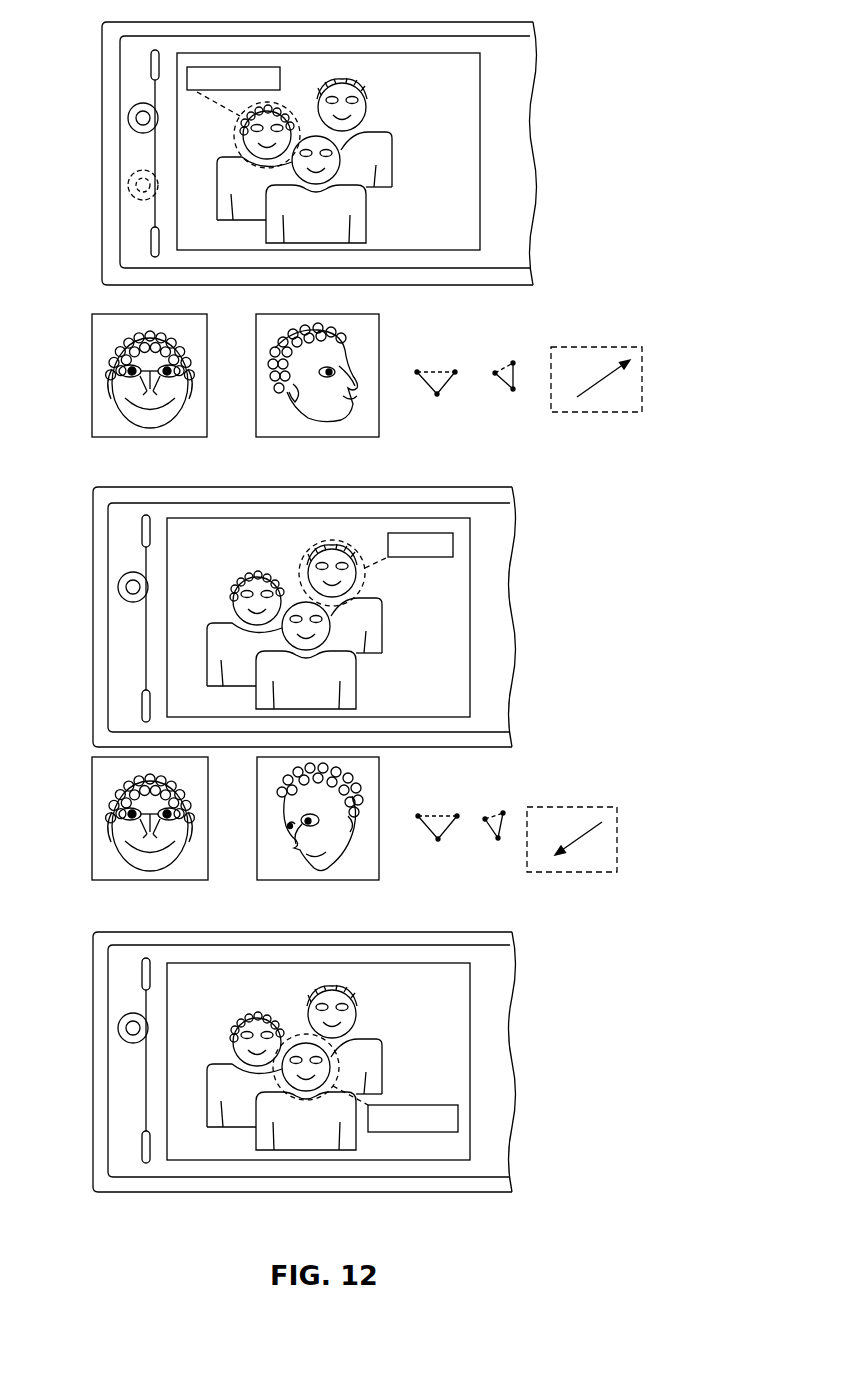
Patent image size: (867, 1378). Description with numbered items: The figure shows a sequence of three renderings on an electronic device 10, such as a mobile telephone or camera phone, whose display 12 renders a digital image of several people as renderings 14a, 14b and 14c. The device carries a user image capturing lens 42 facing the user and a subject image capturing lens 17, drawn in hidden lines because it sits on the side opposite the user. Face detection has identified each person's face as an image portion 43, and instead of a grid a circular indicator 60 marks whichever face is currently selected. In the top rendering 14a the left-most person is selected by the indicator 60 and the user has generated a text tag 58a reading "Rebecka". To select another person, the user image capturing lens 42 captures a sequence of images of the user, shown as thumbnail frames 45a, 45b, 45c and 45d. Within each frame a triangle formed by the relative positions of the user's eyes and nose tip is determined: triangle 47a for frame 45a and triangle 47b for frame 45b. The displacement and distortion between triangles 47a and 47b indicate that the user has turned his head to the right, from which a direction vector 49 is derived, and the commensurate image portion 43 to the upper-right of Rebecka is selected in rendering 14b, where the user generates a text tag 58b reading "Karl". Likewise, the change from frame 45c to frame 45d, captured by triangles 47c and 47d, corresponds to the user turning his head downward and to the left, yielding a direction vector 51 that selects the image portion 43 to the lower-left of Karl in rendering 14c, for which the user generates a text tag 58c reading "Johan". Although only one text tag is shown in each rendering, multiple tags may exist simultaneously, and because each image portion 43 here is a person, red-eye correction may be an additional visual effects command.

The electronic device 10 is at (101, 68).
The display 12 is at (480, 165).
The digital image rendering 14a is at (440, 83).
The digital image rendering 14b is at (175, 548).
The digital image rendering 14c is at (175, 990).
The subject image capturing lens 17 is at (128, 184).
The user image capturing lens 42 is at (128, 118).
The image portion 43 is at (240, 152).
The thumbnail frame 45a is at (92, 353).
The thumbnail frame 45b is at (380, 395).
The thumbnail frame 45c is at (93, 796).
The thumbnail frame 45d is at (380, 840).
The triangle 47a is at (437, 372).
The triangle 47b is at (510, 363).
The triangle 47c is at (435, 816).
The triangle 47d is at (503, 813).
The direction vector 49 is at (600, 381).
The direction vector 51 is at (575, 843).
The text tag 58a is at (282, 80).
The text tag 58b is at (407, 557).
The text tag 58c is at (407, 1105).
The circular indicator 60 is at (234, 129).